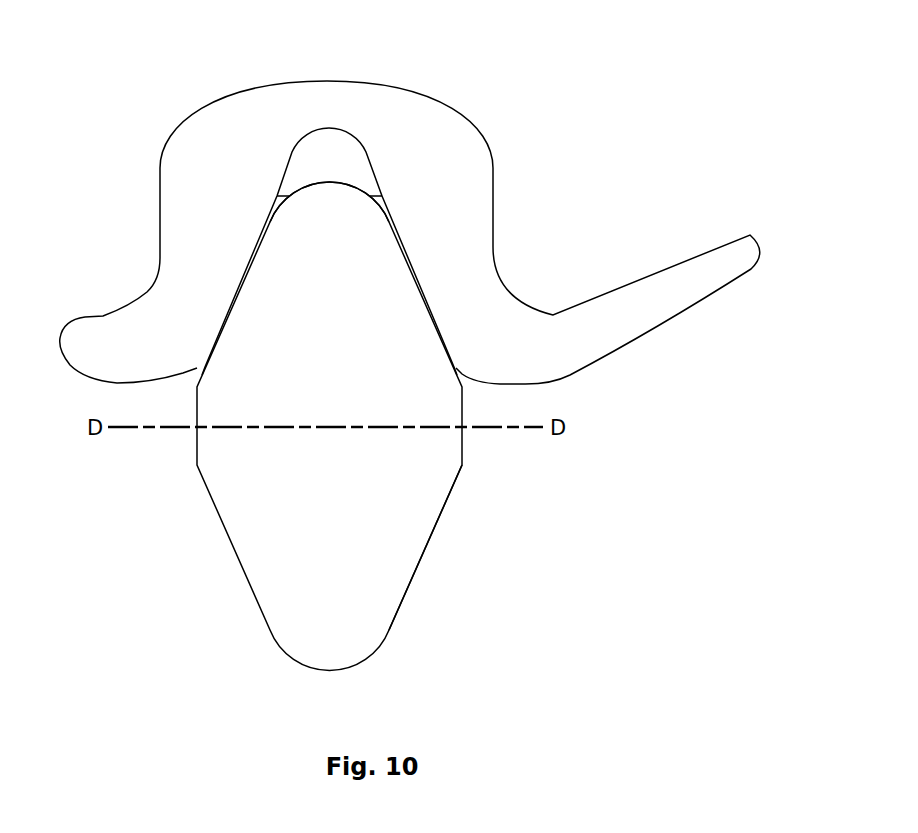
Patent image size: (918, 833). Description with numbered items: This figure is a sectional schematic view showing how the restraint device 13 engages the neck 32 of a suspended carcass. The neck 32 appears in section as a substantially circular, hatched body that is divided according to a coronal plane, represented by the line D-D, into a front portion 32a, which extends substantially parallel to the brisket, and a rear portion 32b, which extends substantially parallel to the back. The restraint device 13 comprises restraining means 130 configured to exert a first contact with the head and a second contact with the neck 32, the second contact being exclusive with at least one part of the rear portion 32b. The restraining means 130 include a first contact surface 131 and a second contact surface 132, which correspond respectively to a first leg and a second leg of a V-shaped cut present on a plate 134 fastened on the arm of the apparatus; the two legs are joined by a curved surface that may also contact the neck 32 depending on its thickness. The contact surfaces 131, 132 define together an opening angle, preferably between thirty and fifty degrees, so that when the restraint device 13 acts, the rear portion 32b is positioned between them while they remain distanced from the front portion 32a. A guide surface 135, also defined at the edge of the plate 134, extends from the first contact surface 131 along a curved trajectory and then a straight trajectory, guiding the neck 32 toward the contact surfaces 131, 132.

The restraint device 13 is at (411, 270).
The restraining means 130 is at (202, 291).
The first contact surface 131 is at (417, 282).
The second contact surface 132 is at (247, 277).
The plate 134 is at (442, 162).
The guide surface 135 is at (655, 325).
The neck 32 is at (370, 343).
The front portion 32a is at (427, 547).
The rear portion 32b is at (332, 182).